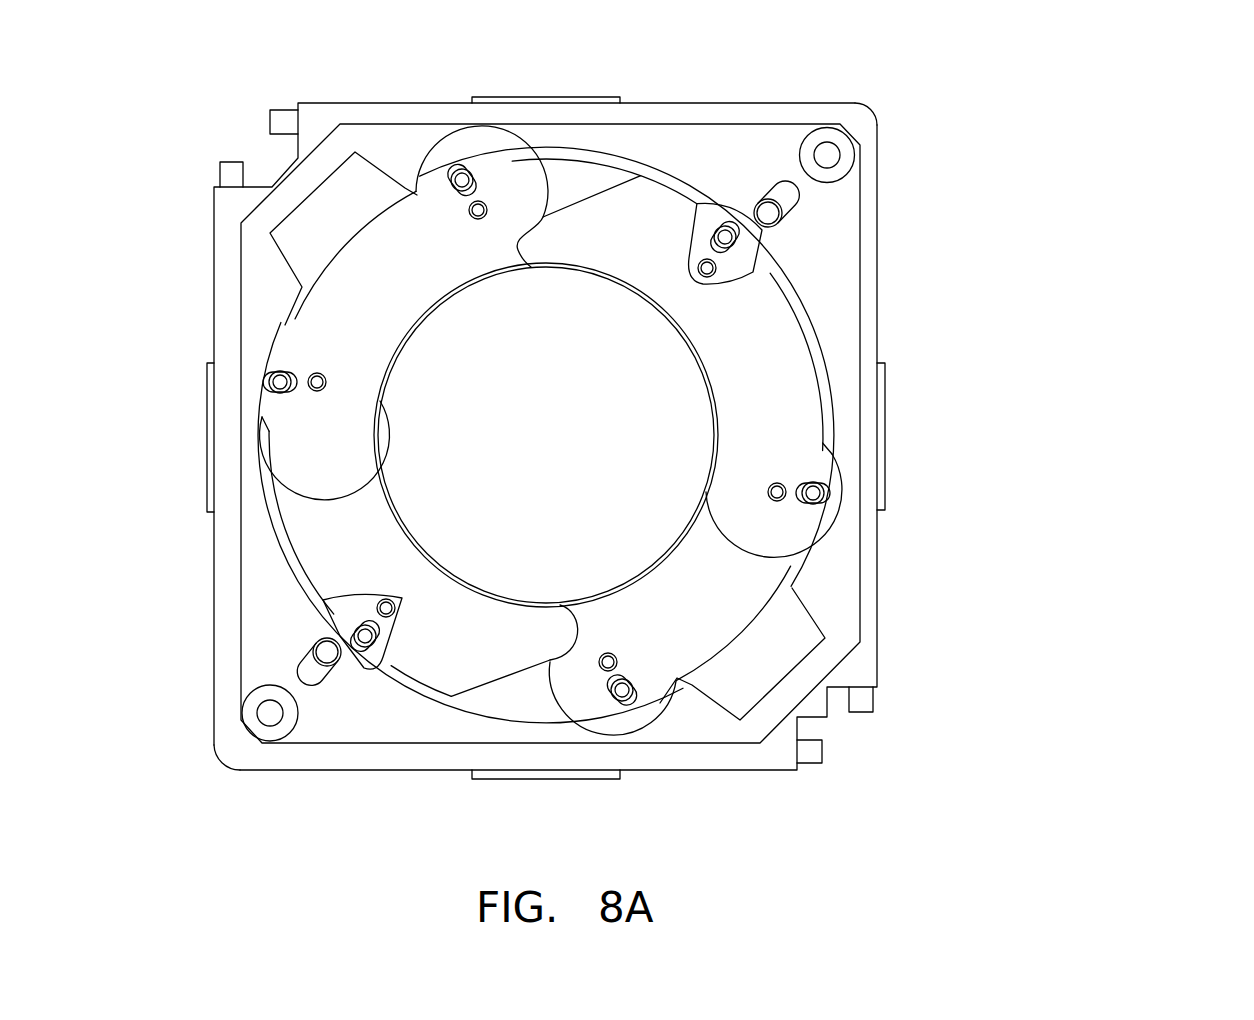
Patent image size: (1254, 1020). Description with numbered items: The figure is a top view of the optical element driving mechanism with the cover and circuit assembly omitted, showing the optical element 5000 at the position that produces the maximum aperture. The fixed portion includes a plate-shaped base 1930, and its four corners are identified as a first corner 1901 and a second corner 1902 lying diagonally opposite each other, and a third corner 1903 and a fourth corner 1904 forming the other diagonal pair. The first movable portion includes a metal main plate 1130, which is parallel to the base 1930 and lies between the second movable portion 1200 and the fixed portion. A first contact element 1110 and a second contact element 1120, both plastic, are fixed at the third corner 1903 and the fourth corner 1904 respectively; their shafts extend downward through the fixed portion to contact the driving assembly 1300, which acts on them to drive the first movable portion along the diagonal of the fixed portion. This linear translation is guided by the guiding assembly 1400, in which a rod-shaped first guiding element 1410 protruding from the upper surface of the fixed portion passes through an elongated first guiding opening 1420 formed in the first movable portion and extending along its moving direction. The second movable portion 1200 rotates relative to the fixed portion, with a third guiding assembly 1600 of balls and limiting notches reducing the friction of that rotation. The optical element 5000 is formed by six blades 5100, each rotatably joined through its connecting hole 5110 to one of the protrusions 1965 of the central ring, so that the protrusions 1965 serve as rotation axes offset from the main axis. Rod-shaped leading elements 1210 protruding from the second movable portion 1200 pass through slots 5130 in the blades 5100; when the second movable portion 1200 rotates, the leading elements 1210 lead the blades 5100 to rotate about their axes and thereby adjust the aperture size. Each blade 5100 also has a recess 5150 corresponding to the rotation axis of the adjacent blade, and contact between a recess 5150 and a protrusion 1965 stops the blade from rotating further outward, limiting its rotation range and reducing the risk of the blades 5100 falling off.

The first contact element 1110 is at (840, 155).
The second contact element 1120 is at (266, 713).
The main plate 1130 is at (253, 548).
The second movable portion 1200 is at (303, 240).
The leading element 1210 is at (845, 497).
The driving assembly 1300 is at (232, 166).
The guiding assembly 1400 is at (766, 440).
The first guiding element 1410 is at (768, 200).
The first guiding opening 1420 is at (790, 188).
The third guiding assembly 1600 is at (740, 618).
The first corner 1901 is at (779, 755).
The second corner 1902 is at (318, 113).
The third corner 1903 is at (820, 112).
The fourth corner 1904 is at (271, 755).
The base 1930 is at (228, 298).
The protrusion 1965 is at (782, 496).
The optical element 5000 is at (302, 444).
The blade 5100 is at (775, 392).
The connecting hole 5110 is at (818, 482).
The slot 5130 is at (838, 494).
The recess 5150 is at (740, 292).